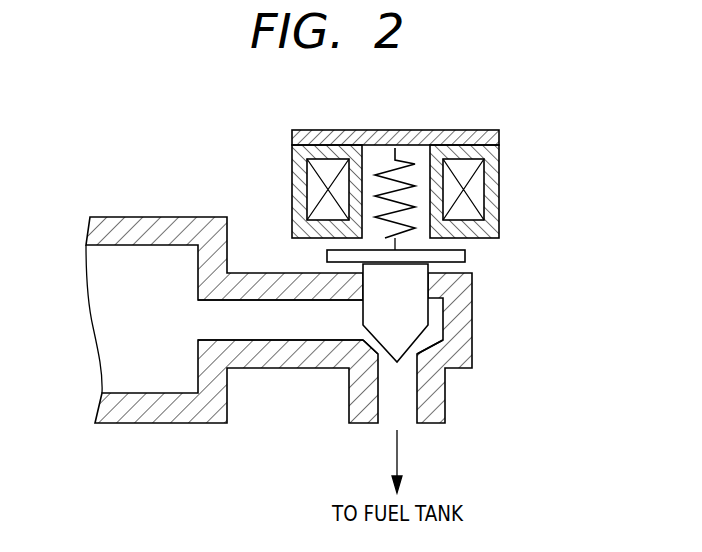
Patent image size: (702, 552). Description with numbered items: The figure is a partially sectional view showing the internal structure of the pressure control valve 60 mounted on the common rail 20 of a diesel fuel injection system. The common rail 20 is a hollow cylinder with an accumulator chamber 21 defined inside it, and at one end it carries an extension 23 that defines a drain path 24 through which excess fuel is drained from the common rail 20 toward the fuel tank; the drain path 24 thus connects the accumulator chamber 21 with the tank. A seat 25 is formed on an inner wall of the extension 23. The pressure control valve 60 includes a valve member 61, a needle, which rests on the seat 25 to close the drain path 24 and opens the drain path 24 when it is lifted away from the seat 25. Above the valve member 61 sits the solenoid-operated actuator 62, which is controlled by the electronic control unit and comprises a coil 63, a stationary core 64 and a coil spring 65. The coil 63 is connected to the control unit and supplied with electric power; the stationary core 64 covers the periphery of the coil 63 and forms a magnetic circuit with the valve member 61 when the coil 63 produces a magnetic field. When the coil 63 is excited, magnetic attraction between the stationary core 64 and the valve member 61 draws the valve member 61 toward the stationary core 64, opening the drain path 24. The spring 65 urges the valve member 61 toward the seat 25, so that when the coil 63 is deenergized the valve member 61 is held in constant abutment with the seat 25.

The common rail 20 is at (138, 215).
The accumulator chamber 21 is at (107, 323).
The extension 23 is at (280, 368).
The drain path 24 is at (257, 310).
The seat 25 is at (420, 337).
The pressure control valve 60 is at (442, 150).
The valve member 61 is at (432, 305).
The solenoid-operated actuator 62 is at (500, 152).
The coil 63 is at (323, 165).
The stationary core 64 is at (500, 217).
The coil spring 65 is at (405, 167).